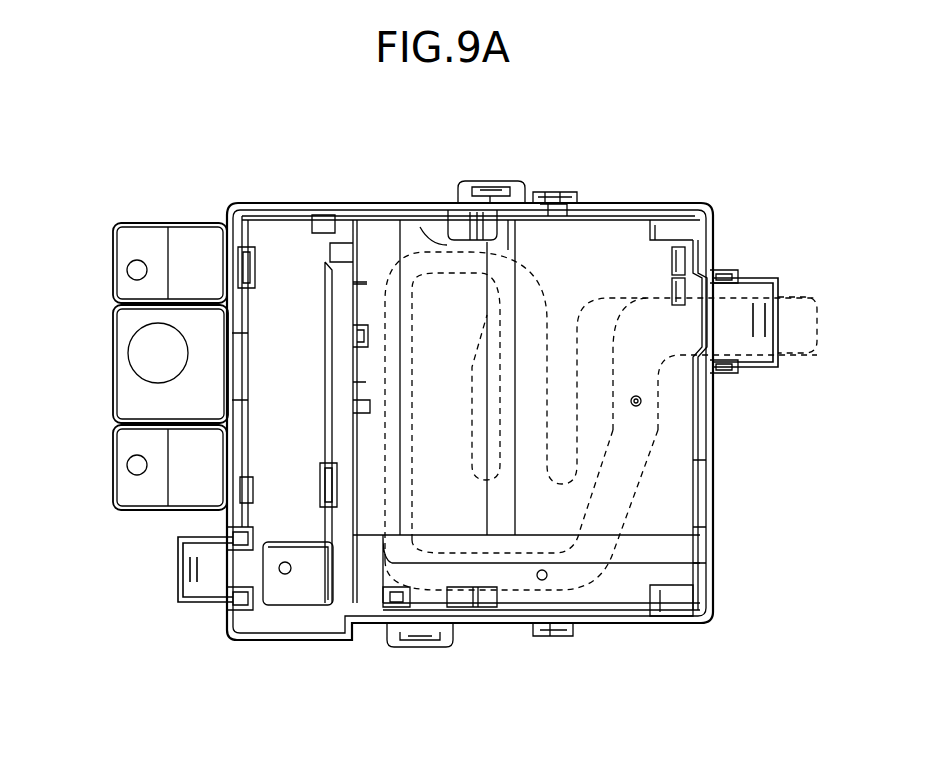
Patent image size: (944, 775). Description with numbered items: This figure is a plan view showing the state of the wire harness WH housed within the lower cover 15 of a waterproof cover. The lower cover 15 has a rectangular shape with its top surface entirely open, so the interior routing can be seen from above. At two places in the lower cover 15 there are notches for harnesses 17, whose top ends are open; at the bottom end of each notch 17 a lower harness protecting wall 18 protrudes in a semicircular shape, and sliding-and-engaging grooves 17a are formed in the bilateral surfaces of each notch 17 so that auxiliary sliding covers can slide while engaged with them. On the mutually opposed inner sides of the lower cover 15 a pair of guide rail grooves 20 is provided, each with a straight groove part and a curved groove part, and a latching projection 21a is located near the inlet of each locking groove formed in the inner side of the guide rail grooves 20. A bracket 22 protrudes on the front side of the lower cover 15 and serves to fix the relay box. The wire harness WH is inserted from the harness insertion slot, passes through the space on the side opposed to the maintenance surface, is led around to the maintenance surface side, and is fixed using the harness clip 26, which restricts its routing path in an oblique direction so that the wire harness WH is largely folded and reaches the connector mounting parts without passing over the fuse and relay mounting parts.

The lower cover 15 is at (638, 197).
The bracket 22 is at (145, 243).
The harness clip 26 is at (405, 205).
The guide rail grooves 20 is at (530, 200).
The latching projection 21a is at (558, 197).
The lower harness protecting wall 18 is at (758, 277).
The sliding-and-engaging grooves 17a is at (727, 272).
The notches for harnesses 17 is at (718, 344).
The wire harness WH is at (607, 580).